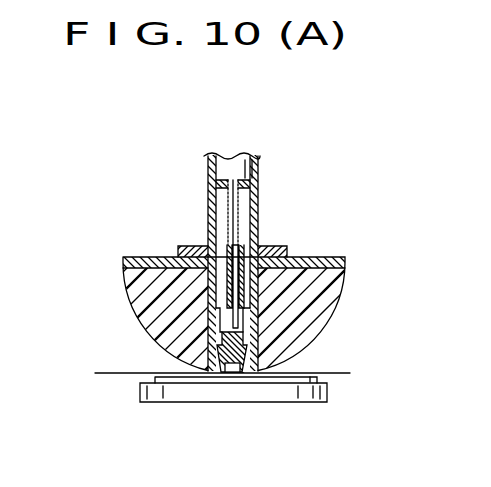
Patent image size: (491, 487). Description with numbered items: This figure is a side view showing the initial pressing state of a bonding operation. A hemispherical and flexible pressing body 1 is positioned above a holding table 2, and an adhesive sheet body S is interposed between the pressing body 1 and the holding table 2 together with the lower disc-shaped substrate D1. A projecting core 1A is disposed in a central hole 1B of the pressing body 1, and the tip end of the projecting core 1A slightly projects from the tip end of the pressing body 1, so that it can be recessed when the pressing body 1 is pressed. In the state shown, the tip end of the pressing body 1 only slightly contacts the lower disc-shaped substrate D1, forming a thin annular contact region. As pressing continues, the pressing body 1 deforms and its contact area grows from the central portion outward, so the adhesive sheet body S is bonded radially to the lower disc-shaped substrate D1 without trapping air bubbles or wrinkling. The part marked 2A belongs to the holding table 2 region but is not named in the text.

The pressing body 1 is at (323, 302).
The projecting core 1A is at (258, 348).
The central hole 1B is at (216, 308).
The holding table 2 is at (328, 392).
The projection of base plate 2A is at (248, 378).
The adhesive sheet body S is at (113, 372).
The lower disc-shaped substrate D1 is at (317, 378).